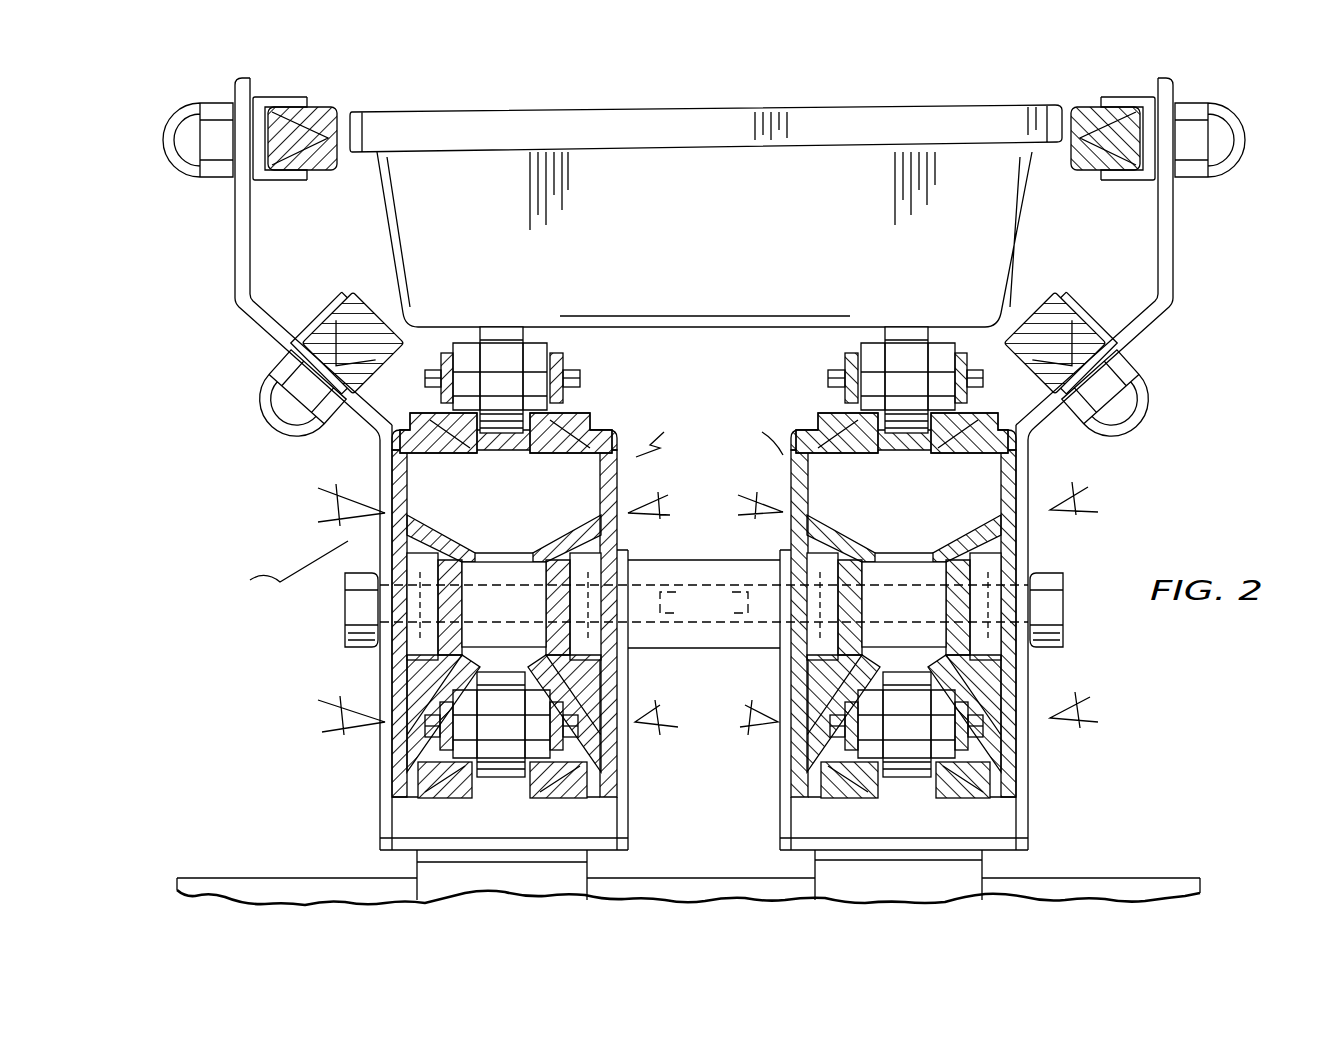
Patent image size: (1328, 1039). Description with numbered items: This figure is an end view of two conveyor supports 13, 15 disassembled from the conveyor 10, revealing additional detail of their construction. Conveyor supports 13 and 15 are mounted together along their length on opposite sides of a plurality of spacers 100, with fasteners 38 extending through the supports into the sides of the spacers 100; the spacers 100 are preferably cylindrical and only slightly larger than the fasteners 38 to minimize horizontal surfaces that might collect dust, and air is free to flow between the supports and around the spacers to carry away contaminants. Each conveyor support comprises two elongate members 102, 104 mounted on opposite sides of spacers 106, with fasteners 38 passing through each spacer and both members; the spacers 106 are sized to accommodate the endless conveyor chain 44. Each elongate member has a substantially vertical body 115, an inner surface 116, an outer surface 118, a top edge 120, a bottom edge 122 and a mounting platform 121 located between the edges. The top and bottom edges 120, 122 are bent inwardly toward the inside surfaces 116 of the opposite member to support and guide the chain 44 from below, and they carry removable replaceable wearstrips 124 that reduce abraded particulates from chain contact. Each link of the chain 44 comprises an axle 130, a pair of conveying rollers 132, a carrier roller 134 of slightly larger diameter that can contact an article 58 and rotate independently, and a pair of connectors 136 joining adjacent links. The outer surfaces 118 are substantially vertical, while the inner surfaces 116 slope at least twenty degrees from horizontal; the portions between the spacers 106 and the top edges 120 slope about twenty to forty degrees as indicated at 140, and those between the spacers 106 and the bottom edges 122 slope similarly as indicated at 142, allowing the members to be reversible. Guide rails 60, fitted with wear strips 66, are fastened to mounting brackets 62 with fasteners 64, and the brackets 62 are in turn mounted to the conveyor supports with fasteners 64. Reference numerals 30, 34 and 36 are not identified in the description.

The conveyor 10 is at (281, 570).
The conveyor support 13 is at (758, 430).
The conveyor support 15 is at (666, 432).
The rail 30 is at (256, 877).
The housing 34 is at (386, 786).
The mounting pad 36 is at (440, 882).
The fastener 38 is at (358, 608).
The endless conveyor chain 44 is at (582, 378).
The article 58 is at (632, 107).
The guide rail 60 is at (290, 104).
The mounting bracket 62 is at (236, 272).
The fastener 64 is at (205, 125).
The wear strip 66 is at (318, 115).
The spacer 100 is at (702, 560).
The elongate member 102 is at (562, 535).
The elongate member 104 is at (458, 504).
The spacer 106 is at (504, 570).
The substantially vertical body 115 is at (393, 538).
The inner surface 116 is at (560, 472).
The outer surface 118 is at (392, 742).
The top edge 120 is at (432, 420).
The mounting platform 121 is at (540, 600).
The bottom edge 122 is at (394, 828).
The wear strip 124 is at (538, 452).
The axle 130 is at (432, 378).
The conveying roller 132 is at (490, 350).
The carrier roller 134 is at (518, 352).
The connector 136 is at (447, 355).
The slope of inner surface between spacers and top edges 140 is at (312, 508).
The slope of inner surface between spacers and bottom edges 142 is at (310, 720).